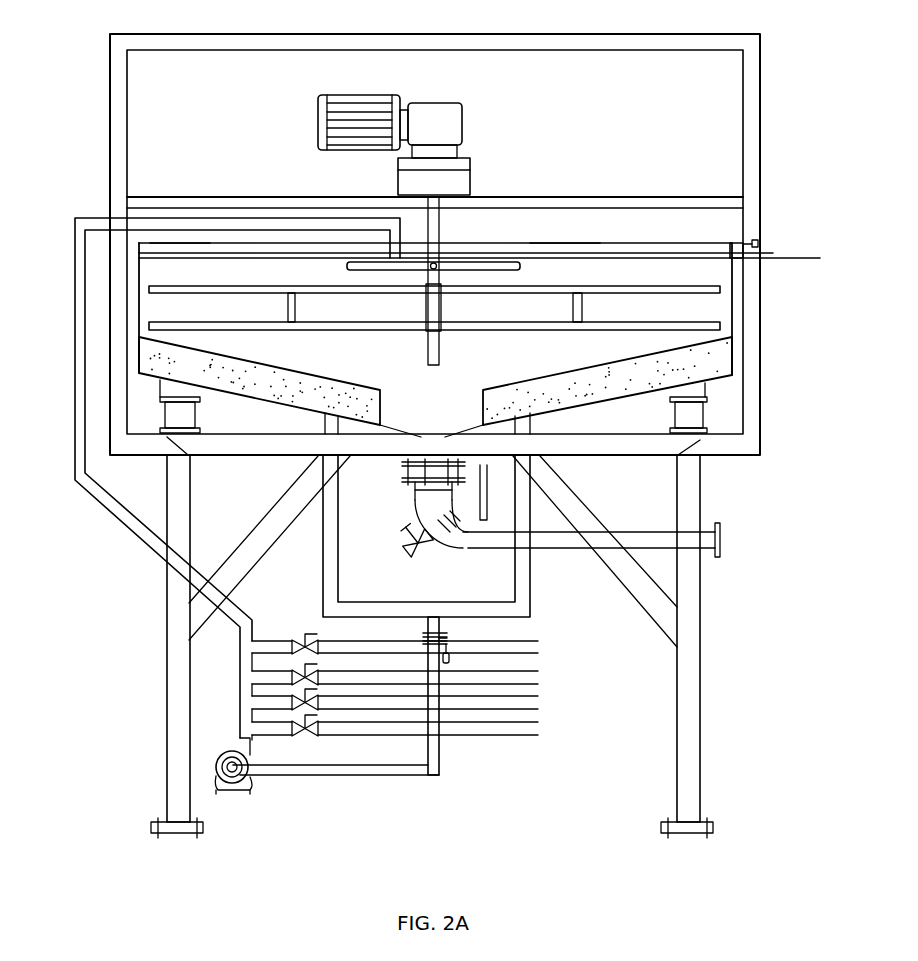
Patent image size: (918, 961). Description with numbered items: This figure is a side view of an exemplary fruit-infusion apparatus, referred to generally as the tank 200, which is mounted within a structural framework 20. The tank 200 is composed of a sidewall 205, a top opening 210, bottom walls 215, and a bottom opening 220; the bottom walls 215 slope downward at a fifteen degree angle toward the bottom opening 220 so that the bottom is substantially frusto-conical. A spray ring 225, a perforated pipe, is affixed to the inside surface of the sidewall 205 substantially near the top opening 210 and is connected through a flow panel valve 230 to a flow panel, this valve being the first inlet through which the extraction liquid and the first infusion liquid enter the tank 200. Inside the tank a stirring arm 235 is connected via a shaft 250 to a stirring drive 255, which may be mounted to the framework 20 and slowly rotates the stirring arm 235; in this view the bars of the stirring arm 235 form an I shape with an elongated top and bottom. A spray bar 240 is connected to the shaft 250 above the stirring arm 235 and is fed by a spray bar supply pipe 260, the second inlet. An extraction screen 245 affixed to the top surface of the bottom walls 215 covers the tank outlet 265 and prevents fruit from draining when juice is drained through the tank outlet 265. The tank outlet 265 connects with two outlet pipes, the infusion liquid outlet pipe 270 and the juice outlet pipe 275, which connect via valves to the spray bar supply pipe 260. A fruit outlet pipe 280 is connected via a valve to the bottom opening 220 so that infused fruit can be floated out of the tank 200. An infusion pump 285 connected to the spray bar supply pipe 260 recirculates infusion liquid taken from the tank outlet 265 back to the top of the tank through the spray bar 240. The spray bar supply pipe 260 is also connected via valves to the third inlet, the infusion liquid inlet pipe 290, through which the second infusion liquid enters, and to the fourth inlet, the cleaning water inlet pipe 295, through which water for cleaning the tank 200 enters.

The structural framework 20 is at (652, 34).
The tank 200 is at (136, 257).
The sidewall 205 is at (140, 297).
The top opening 210 is at (175, 243).
The bottom walls 215 is at (286, 407).
The bottom opening 220 is at (412, 440).
The spray ring 225 is at (561, 243).
The flow panel valve 230 is at (740, 258).
The stirring arm 235 is at (690, 296).
The spray bar 240 is at (378, 262).
The extraction screen 245 is at (483, 403).
The shaft 250 is at (442, 230).
The stirring drive 255 is at (352, 95).
The spray bar supply pipe 260 is at (75, 388).
The tank outlet 265 is at (580, 423).
The infusion liquid outlet pipe 270 is at (536, 696).
The juice outlet pipe 275 is at (536, 641).
The fruit outlet pipe 280 is at (650, 531).
The infusion pump 285 is at (236, 788).
The infusion liquid inlet pipe 290 is at (536, 672).
The cleaning water inlet pipe 295 is at (536, 737).